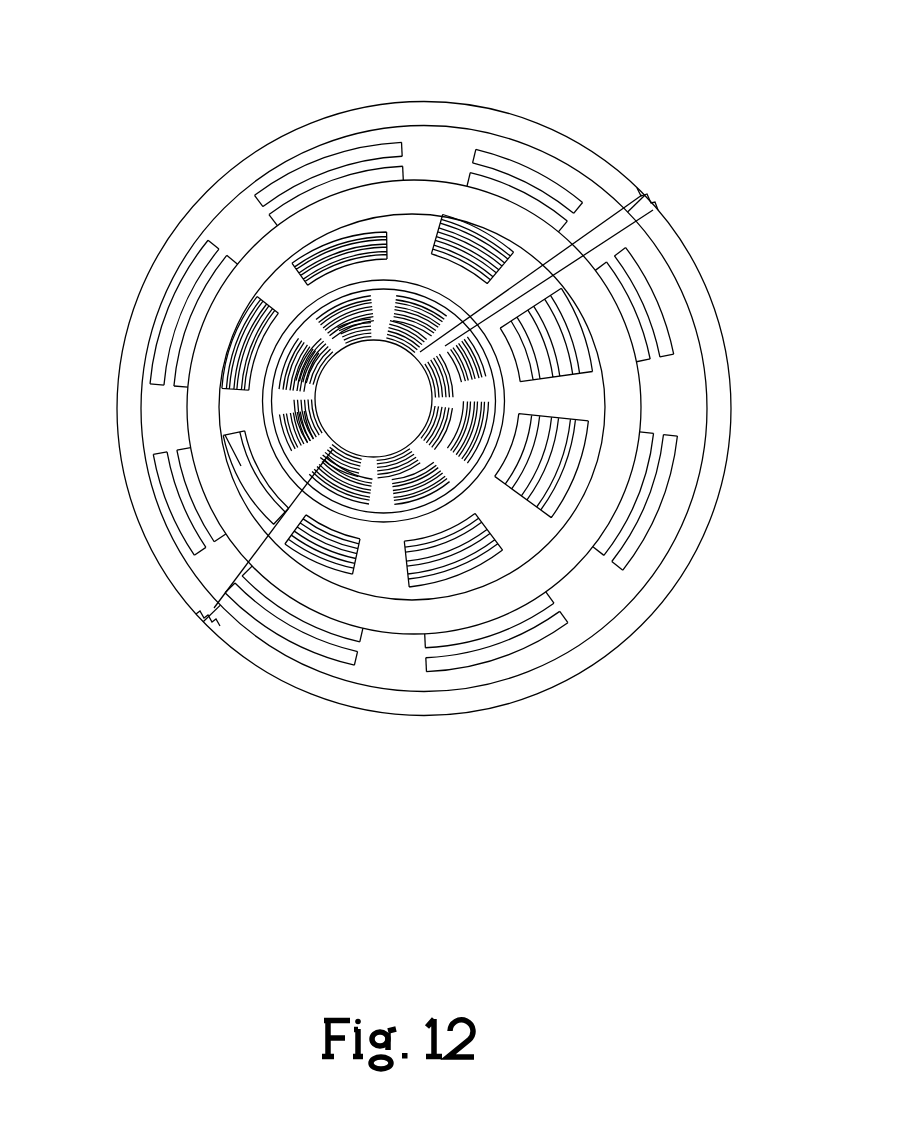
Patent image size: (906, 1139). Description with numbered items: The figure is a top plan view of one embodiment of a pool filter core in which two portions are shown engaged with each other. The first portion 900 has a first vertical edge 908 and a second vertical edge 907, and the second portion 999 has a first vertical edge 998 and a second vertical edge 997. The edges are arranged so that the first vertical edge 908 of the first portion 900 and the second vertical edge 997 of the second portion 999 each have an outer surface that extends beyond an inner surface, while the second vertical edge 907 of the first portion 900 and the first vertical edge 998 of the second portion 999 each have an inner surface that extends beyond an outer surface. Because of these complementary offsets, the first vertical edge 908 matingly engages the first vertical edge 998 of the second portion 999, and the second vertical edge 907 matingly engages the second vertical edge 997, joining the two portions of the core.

The first portion 900 is at (138, 134).
The second vertical edge 907 is at (592, 213).
The first vertical edge 908 is at (141, 631).
The second vertical edge 997 is at (623, 259).
The first vertical edge 998 is at (198, 605).
The second portion 999 is at (665, 660).